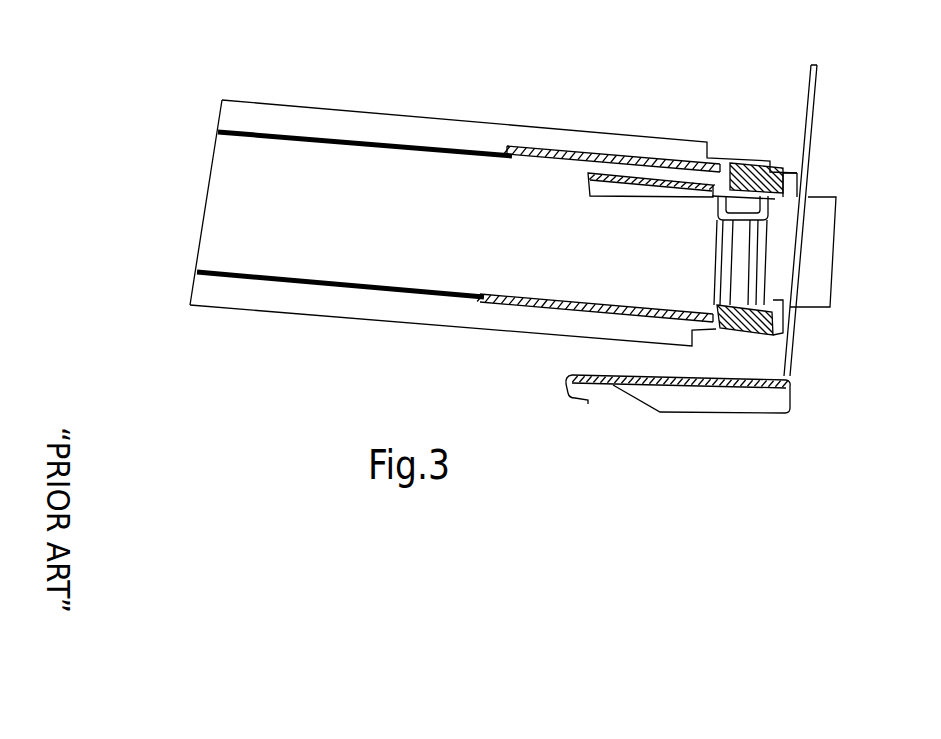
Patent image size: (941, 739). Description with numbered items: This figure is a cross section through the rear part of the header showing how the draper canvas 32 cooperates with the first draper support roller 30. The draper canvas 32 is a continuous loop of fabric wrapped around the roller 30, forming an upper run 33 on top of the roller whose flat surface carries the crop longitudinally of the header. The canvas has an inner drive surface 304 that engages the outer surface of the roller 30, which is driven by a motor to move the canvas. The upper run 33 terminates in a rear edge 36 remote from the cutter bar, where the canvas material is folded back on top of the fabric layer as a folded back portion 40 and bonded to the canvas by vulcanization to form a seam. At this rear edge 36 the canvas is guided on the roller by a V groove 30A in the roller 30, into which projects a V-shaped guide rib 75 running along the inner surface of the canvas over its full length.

The first draper support roller 30 is at (493, 202).
The V groove 30A is at (770, 250).
The draper canvas 32 is at (312, 290).
The upper run 33 is at (562, 153).
The rear edge 36 is at (812, 172).
The folded back portion 40 is at (717, 106).
The V-shaped guide rib 75 is at (712, 200).
The inner drive surface 304 is at (328, 276).